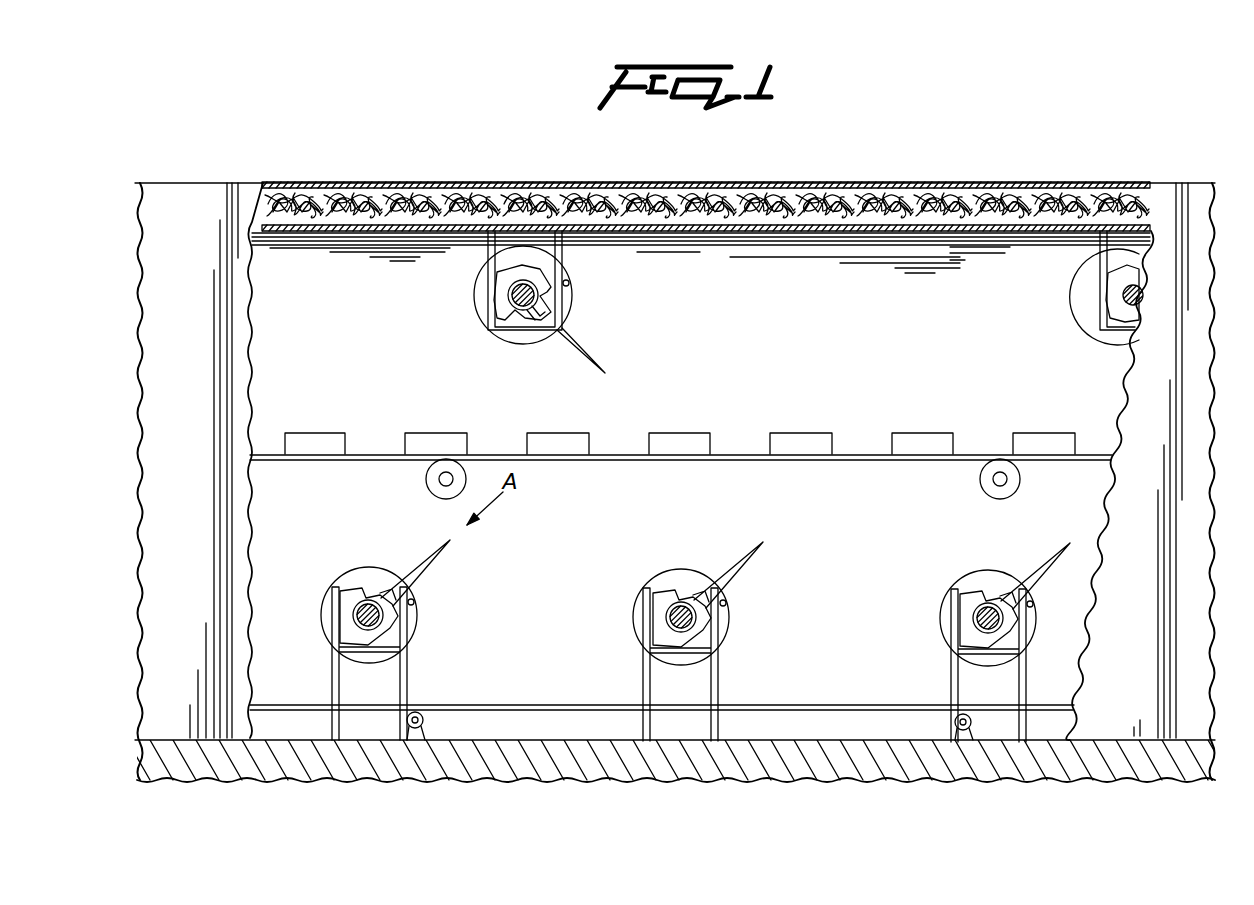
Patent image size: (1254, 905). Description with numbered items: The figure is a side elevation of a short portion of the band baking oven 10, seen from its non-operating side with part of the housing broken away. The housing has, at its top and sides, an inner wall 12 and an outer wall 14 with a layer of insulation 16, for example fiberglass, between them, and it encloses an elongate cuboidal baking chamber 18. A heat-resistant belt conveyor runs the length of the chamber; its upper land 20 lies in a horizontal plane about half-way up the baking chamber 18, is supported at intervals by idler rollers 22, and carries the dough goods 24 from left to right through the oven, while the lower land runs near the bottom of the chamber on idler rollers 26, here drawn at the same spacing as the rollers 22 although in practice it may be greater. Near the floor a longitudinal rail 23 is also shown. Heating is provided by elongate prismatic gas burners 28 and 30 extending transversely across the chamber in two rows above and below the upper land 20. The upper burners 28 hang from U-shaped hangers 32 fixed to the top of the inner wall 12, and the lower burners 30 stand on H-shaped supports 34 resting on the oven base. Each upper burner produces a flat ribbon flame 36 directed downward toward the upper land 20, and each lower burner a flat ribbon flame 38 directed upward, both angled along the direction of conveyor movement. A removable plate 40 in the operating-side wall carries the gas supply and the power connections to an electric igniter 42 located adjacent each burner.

The baking oven 10 is at (1070, 180).
The inner wall 12 is at (686, 232).
The outer wall 14 is at (393, 182).
The layer of insulation 16 is at (490, 195).
The baking chamber 18 is at (679, 522).
The upper land of the belt conveyor 20 is at (875, 461).
The idler rollers 22 is at (425, 487).
The lower rail 23 is at (822, 712).
The dough goods 24 is at (786, 444).
The idler rollers 26 is at (418, 728).
The gas burners 28 is at (505, 313).
The gas burners 30 is at (355, 632).
The U-shaped hangers 32 is at (563, 265).
The H-shaped supports 34 is at (408, 658).
The flat ribbon flame 36 is at (588, 353).
The flat ribbon flame 38 is at (431, 558).
The removable plate 40 is at (480, 287).
The electric igniter 42 is at (570, 284).